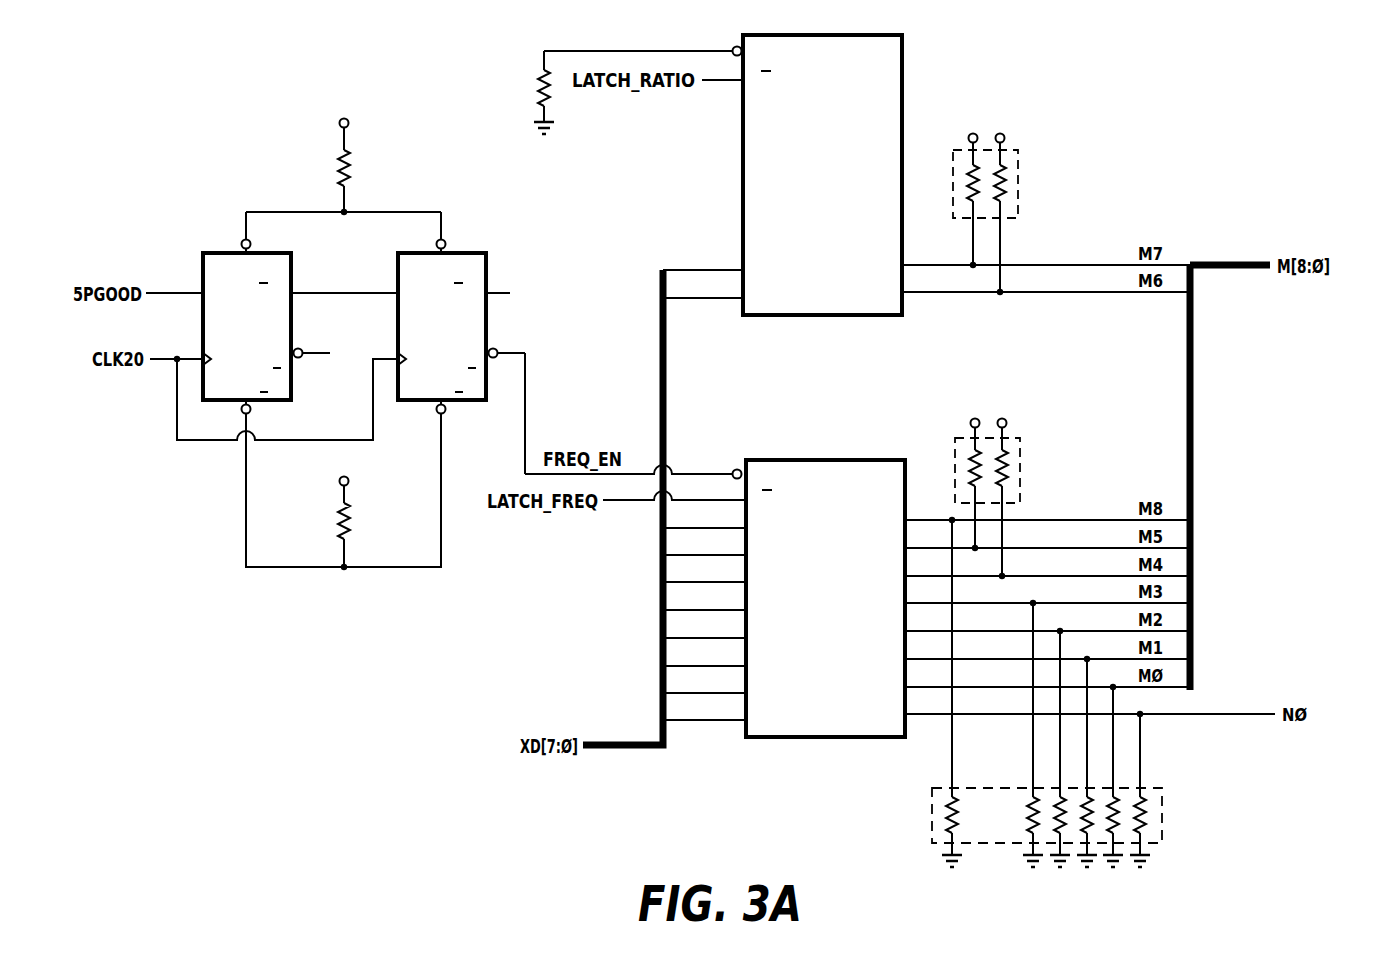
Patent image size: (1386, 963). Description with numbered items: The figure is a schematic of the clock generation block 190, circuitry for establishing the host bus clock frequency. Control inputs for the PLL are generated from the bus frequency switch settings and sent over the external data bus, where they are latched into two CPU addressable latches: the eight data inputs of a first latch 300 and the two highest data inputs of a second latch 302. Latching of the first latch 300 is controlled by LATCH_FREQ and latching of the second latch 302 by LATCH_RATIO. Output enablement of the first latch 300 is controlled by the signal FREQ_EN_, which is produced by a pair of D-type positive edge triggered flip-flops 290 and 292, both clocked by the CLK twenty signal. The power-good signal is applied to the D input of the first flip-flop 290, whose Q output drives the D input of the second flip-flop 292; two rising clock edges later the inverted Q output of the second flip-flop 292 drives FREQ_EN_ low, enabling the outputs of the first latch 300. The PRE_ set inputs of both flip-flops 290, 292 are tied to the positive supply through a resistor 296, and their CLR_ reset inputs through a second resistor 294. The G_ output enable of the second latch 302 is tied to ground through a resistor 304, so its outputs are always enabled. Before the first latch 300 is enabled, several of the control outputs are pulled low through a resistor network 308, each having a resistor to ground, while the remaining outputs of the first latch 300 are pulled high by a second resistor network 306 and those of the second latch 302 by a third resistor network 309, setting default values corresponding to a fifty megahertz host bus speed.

The clock generation block 190 is at (1288, 120).
The first flip-flop 290 is at (262, 253).
The second flip-flop 292 is at (457, 253).
The second resistor 294 is at (351, 517).
The resistor 296 is at (350, 162).
The first latch 300 is at (812, 737).
The second latch 302 is at (810, 315).
The resistor 304 is at (538, 90).
The second resistor network 306 is at (1022, 462).
The resistor network 308 is at (1164, 816).
The third resistor network 309 is at (1020, 176).